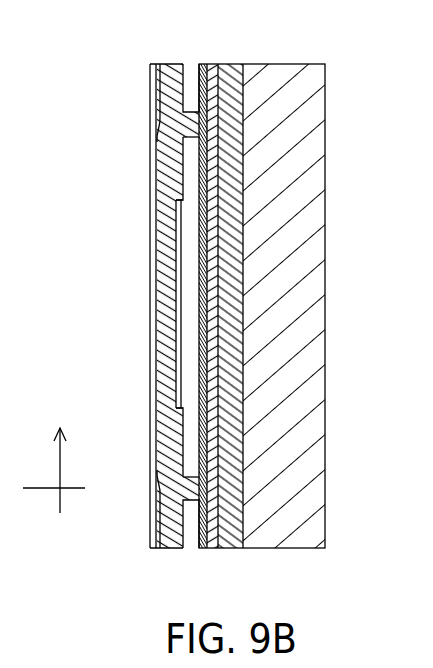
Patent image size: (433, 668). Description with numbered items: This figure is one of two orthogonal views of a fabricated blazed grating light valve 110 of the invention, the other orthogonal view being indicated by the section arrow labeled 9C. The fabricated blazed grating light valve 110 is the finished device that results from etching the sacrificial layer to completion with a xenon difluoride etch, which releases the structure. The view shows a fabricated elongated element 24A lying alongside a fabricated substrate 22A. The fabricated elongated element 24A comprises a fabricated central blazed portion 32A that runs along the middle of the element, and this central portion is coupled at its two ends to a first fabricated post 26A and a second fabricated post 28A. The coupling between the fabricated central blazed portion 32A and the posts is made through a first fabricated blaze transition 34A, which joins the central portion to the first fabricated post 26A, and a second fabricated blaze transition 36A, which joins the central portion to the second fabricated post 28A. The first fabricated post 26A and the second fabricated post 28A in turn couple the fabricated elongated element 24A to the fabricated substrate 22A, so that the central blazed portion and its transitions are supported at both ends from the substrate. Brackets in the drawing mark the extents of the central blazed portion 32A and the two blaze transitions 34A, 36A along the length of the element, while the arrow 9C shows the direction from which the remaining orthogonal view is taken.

The fabricated blazed grating light valve 110 is at (118, 46).
The fabricated substrate 22A is at (202, 53).
The fabricated elongated element 24A is at (151, 533).
The first fabricated post 26A is at (188, 500).
The second fabricated post 28A is at (191, 108).
The fabricated central blazed portion 32A is at (138, 205).
The first fabricated blaze transition 34A is at (138, 415).
The second fabricated blaze transition 36A is at (138, 125).
The view direction 9C is at (64, 476).